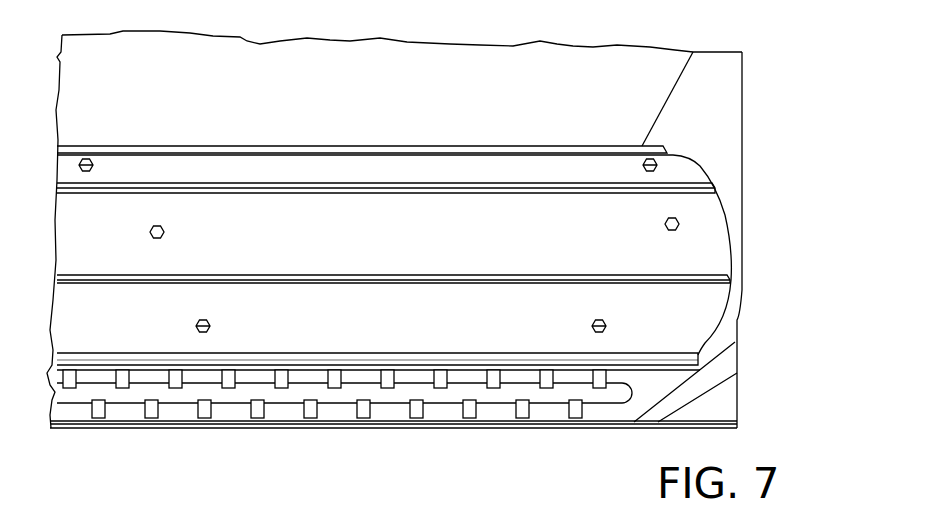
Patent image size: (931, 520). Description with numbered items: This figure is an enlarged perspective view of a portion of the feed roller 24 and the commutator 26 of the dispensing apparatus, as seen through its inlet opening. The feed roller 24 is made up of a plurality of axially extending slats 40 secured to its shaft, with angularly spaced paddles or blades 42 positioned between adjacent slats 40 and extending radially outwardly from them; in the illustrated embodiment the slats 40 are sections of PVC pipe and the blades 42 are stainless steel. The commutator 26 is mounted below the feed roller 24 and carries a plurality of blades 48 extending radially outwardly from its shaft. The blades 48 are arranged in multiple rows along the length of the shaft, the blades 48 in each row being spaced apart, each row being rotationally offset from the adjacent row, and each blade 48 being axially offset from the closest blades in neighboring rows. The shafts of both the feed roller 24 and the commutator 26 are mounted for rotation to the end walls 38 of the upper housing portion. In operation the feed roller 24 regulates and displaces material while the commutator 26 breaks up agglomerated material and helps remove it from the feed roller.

The feed roller 24 is at (535, 162).
The commutator 26 is at (437, 400).
The end wall 38 is at (720, 140).
The slat 40 is at (707, 222).
The blade 42 is at (452, 148).
The blade 48 is at (333, 382).